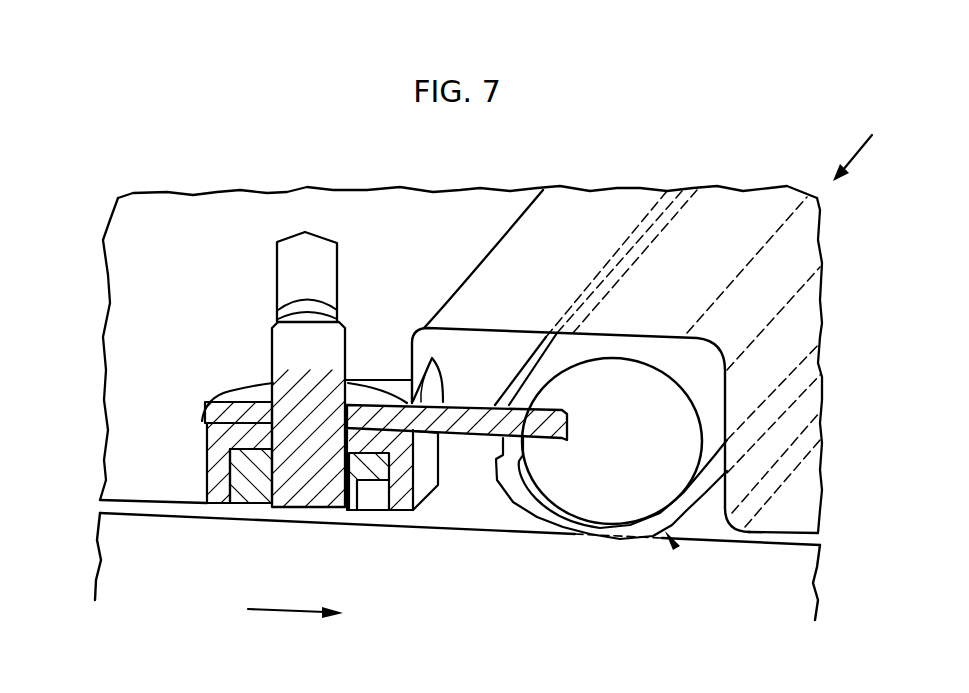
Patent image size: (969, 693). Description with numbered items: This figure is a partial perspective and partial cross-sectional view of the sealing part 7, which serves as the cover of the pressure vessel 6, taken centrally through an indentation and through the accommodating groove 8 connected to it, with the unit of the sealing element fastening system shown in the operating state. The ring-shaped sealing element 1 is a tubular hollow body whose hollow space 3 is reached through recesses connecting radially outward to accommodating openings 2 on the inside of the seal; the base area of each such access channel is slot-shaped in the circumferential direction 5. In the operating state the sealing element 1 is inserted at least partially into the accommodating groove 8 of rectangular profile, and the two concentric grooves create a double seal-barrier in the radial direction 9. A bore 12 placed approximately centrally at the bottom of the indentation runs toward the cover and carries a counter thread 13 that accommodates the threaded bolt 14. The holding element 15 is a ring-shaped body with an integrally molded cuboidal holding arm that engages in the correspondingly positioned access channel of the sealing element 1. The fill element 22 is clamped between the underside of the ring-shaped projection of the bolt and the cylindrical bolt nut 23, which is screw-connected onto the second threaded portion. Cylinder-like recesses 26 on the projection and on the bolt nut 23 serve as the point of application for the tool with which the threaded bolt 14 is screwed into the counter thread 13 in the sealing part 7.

The sealing element 1 is at (676, 548).
The accommodating opening 2 is at (497, 442).
The hollow space 3 is at (607, 453).
The circumferential direction 5 is at (858, 136).
The pressure vessel 6 is at (150, 557).
The sealing part 7 is at (150, 349).
The accommodating groove 8 is at (710, 520).
The radial direction 9 is at (290, 613).
The bore 12 is at (305, 265).
The counter thread 13 is at (340, 310).
The threaded bolt 14 is at (270, 372).
The holding element 15 is at (542, 440).
The fill element 22 is at (218, 483).
The cylindrical bolt nut 23 is at (248, 480).
The recess 26 is at (375, 497).